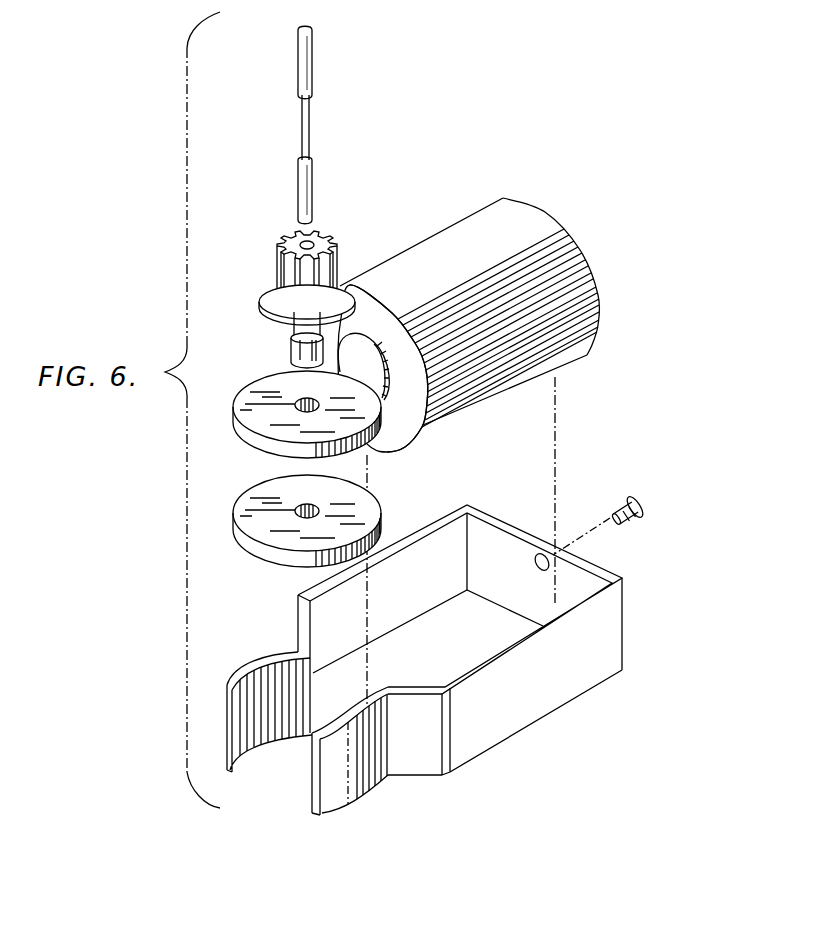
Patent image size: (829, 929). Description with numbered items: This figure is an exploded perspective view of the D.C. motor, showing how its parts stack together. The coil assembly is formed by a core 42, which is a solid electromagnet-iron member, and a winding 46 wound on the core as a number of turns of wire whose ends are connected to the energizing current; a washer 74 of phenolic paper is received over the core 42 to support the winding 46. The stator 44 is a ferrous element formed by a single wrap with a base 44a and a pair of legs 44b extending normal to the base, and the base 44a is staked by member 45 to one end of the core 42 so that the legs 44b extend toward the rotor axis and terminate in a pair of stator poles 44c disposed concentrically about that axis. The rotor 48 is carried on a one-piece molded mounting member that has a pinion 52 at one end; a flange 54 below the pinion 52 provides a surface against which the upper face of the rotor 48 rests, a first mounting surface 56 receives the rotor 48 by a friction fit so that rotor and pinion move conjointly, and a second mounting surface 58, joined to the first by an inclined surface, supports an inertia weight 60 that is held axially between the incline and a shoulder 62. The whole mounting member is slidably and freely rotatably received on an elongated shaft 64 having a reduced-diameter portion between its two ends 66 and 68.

The core 42 is at (376, 375).
The stator 44 is at (434, 663).
The base 44a is at (507, 590).
The legs 44b is at (325, 606).
The stator poles 44c is at (265, 738).
The member 45 is at (633, 522).
The winding 46 is at (485, 325).
The rotor 48 is at (333, 438).
The pinion 52 is at (322, 243).
The flange 54 is at (266, 318).
The first mounting surface 56 is at (296, 342).
The second mounting surface 58 is at (348, 333).
The inertia weight 60 is at (280, 490).
The shoulder 62 is at (339, 334).
The shaft 64 is at (311, 134).
The shaft end 66 is at (306, 62).
The shaft end 68 is at (305, 183).
The washer 74 is at (392, 344).